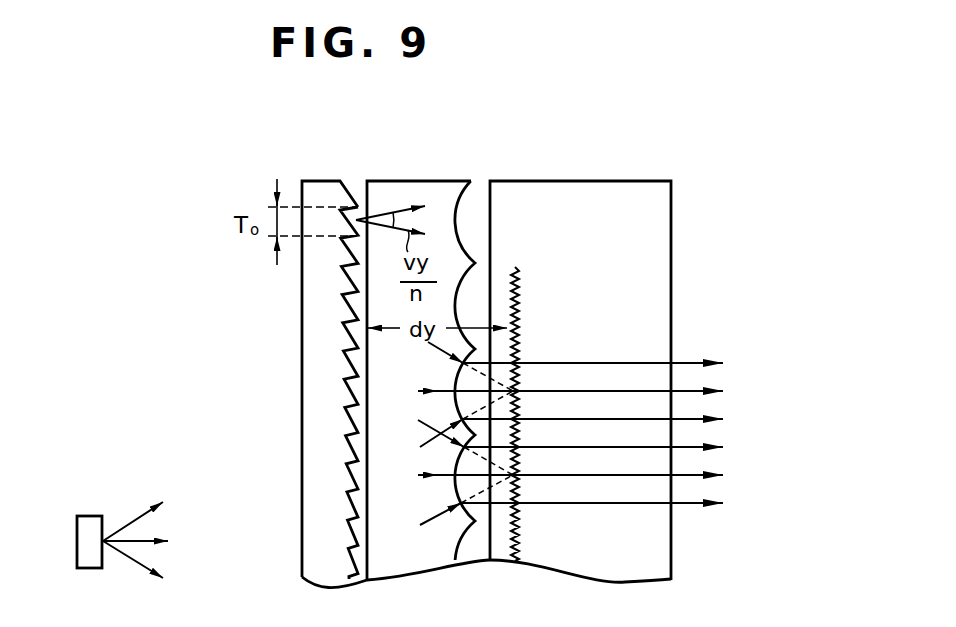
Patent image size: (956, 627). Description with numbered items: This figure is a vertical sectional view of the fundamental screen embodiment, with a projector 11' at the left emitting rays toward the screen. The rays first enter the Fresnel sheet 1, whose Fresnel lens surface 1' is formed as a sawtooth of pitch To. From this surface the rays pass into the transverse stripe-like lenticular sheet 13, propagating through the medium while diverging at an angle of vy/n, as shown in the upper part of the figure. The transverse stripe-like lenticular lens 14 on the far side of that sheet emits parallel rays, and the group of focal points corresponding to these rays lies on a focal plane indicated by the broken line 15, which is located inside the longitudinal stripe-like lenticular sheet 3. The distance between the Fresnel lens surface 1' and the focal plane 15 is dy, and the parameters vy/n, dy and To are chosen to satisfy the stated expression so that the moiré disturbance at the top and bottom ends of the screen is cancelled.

The Fresnel sheet 1 is at (334, 356).
The Fresnel lens surface 1' is at (354, 350).
The transverse stripe-like lenticular sheet 13 is at (402, 195).
The transverse stripe-like lenticular lens 14 is at (458, 184).
The longitudinal stripe-like lenticular sheet 3 is at (587, 196).
The focal plane 15 is at (520, 285).
The projector 11' is at (122, 514).